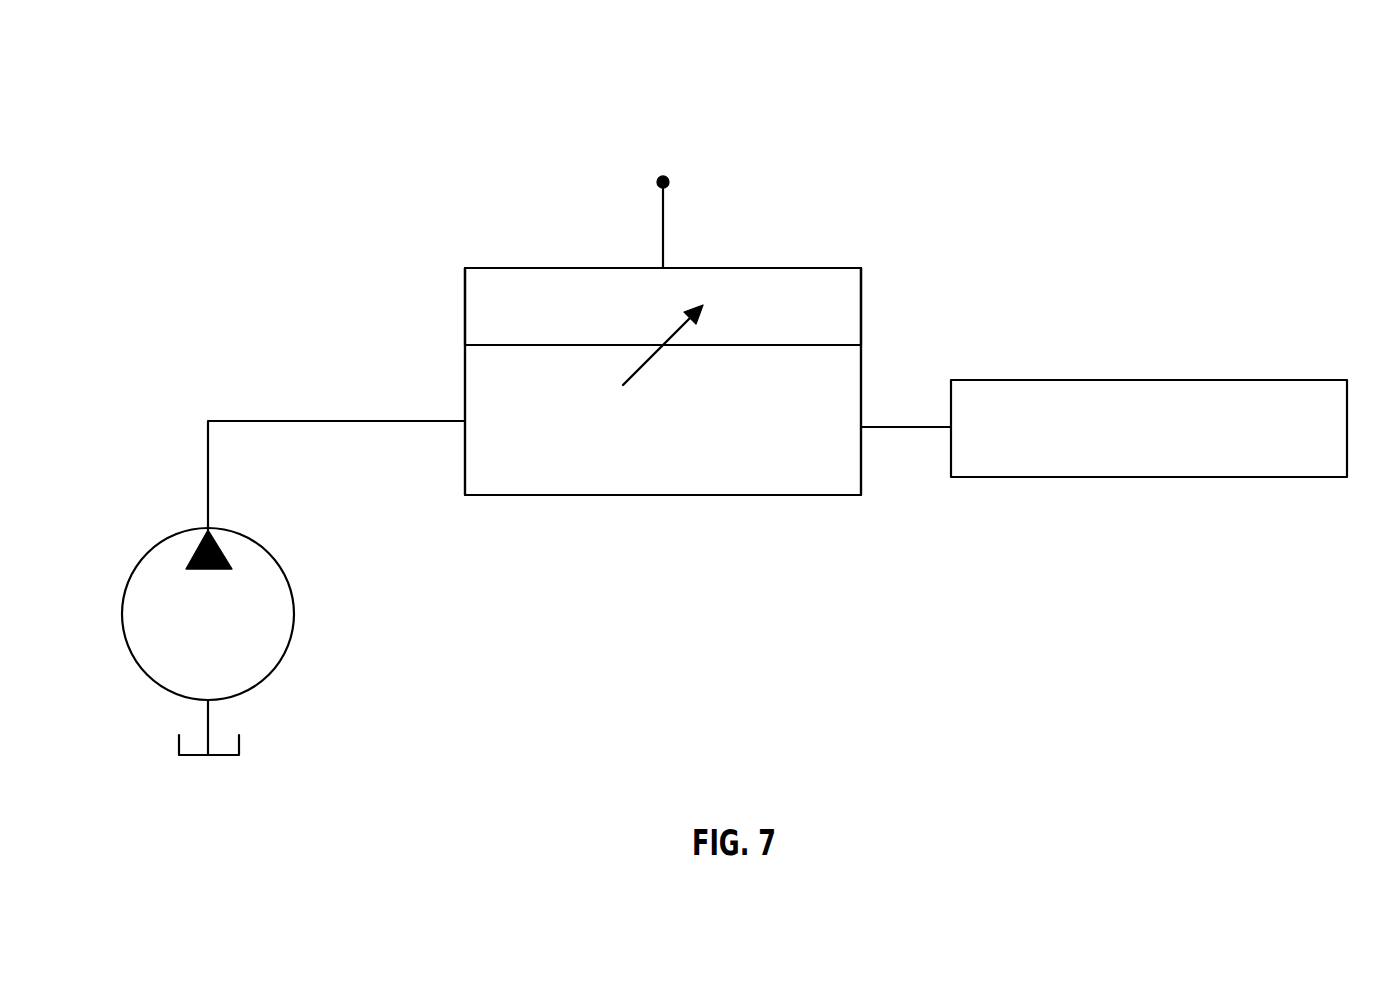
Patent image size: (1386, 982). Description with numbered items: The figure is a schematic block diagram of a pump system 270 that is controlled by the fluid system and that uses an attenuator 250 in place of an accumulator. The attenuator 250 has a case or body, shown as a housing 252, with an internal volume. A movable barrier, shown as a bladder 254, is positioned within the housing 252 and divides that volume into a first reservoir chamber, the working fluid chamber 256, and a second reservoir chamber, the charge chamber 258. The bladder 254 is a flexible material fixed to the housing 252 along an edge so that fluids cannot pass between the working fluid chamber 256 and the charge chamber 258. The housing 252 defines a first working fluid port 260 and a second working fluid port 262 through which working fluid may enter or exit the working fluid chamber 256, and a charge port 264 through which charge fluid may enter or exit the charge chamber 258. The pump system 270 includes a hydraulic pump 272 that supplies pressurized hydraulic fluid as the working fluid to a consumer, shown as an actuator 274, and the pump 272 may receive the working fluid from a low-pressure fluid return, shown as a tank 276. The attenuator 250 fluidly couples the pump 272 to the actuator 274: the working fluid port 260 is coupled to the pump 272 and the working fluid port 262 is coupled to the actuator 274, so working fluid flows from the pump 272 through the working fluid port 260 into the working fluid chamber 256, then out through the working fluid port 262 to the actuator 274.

The attenuator 250 is at (943, 266).
The housing 252 is at (788, 268).
The bladder 254 is at (850, 343).
The working fluid chamber 256 is at (706, 478).
The charge chamber 258 is at (478, 312).
The working fluid port 260 is at (453, 421).
The working fluid port 262 is at (863, 427).
The charge port 264 is at (670, 180).
The pump system 270 is at (1108, 100).
The pump 272 is at (296, 614).
The actuator 274 is at (1275, 380).
The tank 276 is at (218, 755).